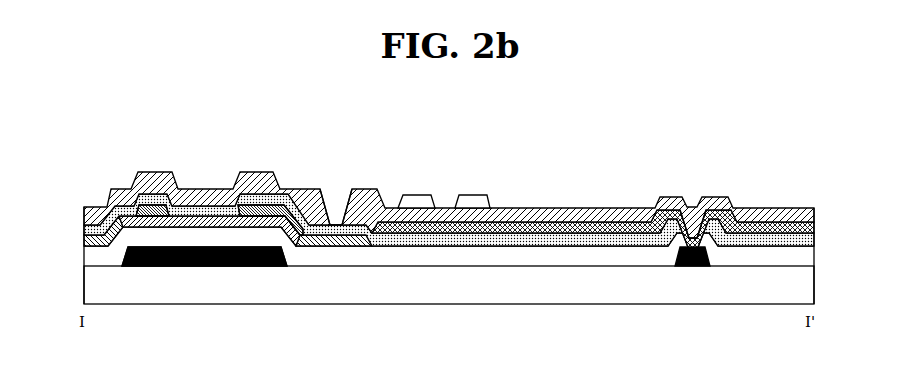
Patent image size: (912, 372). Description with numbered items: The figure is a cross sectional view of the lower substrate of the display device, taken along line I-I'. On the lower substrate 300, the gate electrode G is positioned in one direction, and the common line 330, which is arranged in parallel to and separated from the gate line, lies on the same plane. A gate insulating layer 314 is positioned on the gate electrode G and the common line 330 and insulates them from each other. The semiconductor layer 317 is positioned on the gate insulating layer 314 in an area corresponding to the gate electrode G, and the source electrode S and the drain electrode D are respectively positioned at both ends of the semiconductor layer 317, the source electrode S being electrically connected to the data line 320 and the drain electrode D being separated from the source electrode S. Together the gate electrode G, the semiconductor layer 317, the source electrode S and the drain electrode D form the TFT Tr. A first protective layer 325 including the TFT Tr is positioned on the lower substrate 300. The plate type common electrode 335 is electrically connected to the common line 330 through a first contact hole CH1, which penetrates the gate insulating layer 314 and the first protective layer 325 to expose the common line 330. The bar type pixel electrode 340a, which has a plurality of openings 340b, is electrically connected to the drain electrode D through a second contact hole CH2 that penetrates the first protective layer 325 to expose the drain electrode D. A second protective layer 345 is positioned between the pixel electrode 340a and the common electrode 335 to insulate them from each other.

The lower substrate 300 is at (330, 293).
The gate electrode G is at (236, 262).
The common line 330 is at (694, 268).
The gate insulating layer 314 is at (576, 258).
The semiconductor layer 317 is at (188, 228).
The data line 320 is at (84, 241).
The first protective layer 325 is at (814, 241).
The source electrode S is at (118, 212).
The drain electrode D is at (276, 208).
The common electrode 335 is at (488, 228).
The second protective layer 345 is at (253, 180).
The pixel electrode 340a is at (520, 195).
The openings 340b is at (446, 194).
The first contact hole CH1 is at (693, 193).
The second contact hole CH2 is at (336, 192).
The TFT Tr is at (209, 170).